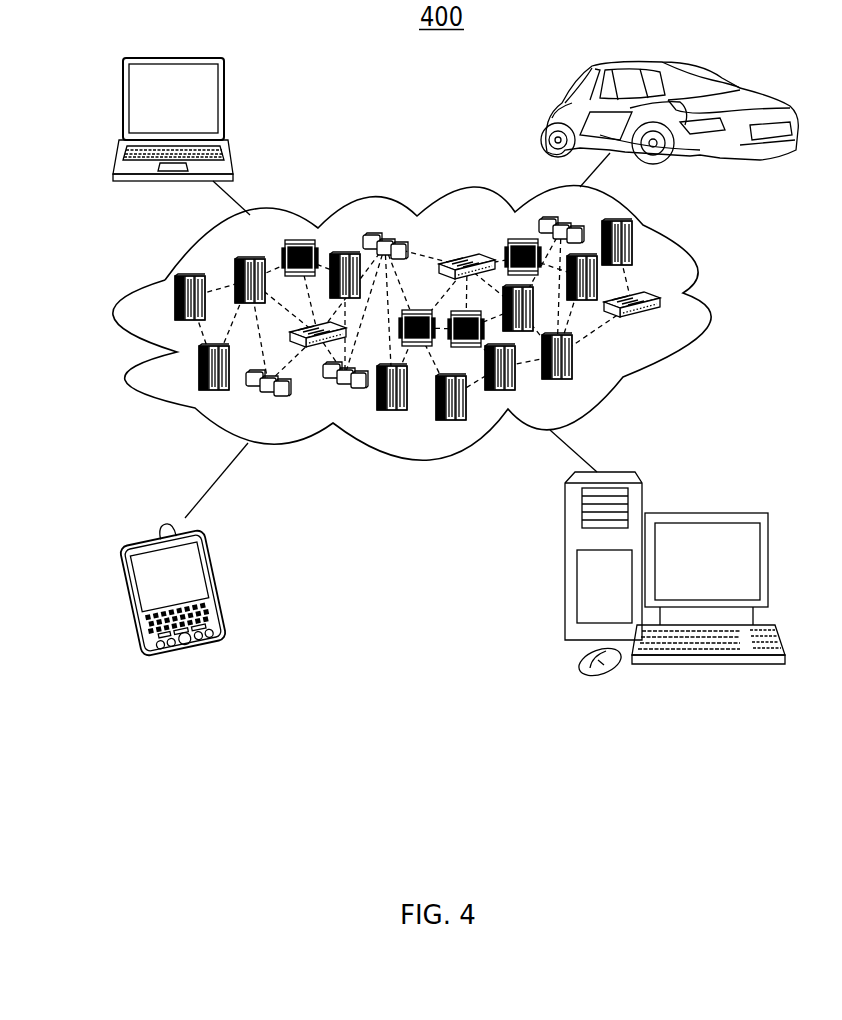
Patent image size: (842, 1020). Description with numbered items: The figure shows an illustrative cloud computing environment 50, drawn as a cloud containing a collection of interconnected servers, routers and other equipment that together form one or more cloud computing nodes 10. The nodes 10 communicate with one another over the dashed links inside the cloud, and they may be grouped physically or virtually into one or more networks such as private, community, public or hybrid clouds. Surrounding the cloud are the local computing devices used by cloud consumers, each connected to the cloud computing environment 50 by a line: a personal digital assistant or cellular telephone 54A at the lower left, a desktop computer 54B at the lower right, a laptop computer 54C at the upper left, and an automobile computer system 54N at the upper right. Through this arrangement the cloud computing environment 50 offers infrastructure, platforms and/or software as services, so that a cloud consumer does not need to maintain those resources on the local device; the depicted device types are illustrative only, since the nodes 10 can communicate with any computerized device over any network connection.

The cloud computing node 10 is at (663, 325).
The cloud computing environment 50 is at (705, 305).
The personal digital assistant or cellular telephone 54A is at (220, 582).
The desktop computer 54B is at (705, 513).
The laptop computer 54C is at (225, 103).
The automobile computer system 54N is at (548, 115).